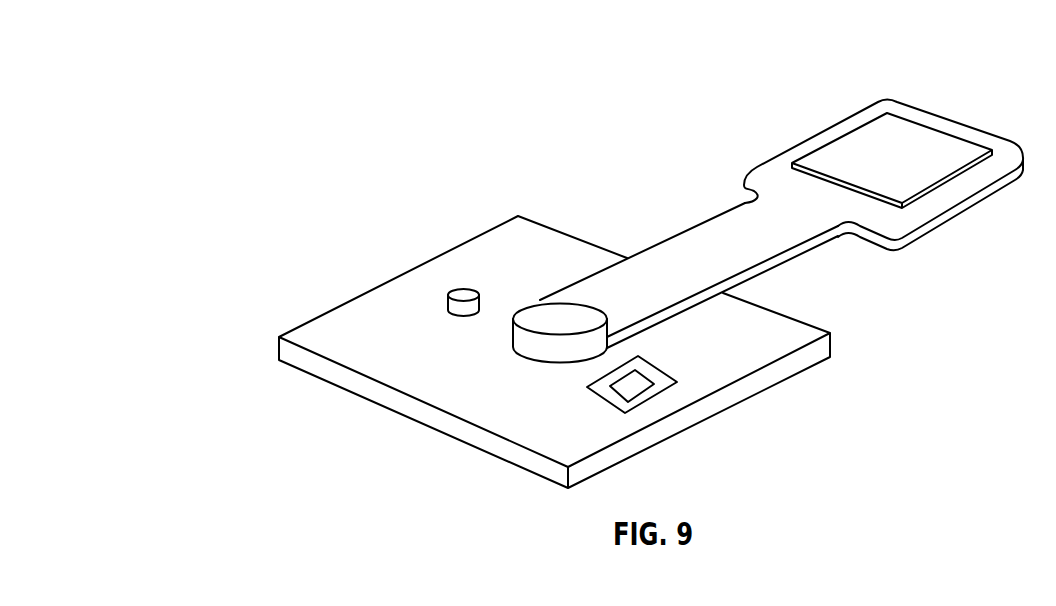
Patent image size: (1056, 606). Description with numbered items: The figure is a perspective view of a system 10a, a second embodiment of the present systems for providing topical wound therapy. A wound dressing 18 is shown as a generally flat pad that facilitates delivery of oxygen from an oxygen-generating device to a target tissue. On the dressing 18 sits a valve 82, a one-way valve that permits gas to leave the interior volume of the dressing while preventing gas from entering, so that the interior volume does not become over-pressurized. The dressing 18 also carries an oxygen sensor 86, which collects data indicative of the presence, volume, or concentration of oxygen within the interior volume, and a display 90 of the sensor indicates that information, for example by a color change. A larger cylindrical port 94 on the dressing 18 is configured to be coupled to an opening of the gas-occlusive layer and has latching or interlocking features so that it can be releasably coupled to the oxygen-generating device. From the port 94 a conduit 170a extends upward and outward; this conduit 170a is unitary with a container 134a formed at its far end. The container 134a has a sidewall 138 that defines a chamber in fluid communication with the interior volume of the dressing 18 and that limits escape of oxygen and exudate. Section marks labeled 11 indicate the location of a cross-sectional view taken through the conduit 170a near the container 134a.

The system 10a is at (277, 182).
The wound dressing 18 is at (375, 265).
The valve 82 is at (461, 289).
The port 94 is at (562, 298).
The conduit 170a is at (643, 248).
The container 134a is at (950, 110).
The sidewall 138 is at (933, 167).
The oxygen sensor 86 is at (655, 395).
The display 90 is at (632, 395).
The section line 11- 11 is at (809, 262).